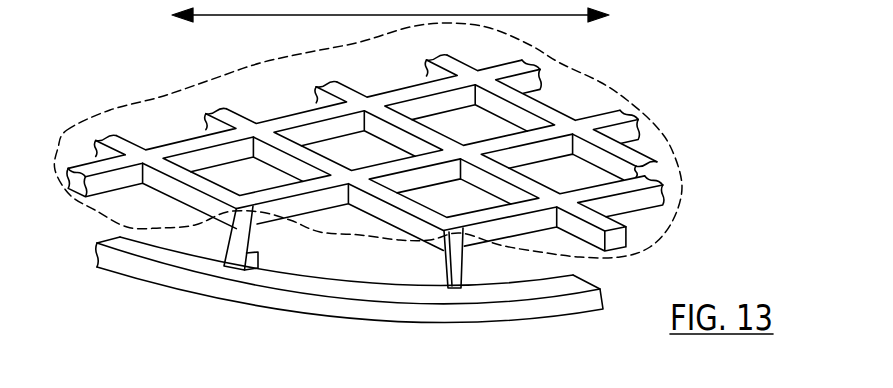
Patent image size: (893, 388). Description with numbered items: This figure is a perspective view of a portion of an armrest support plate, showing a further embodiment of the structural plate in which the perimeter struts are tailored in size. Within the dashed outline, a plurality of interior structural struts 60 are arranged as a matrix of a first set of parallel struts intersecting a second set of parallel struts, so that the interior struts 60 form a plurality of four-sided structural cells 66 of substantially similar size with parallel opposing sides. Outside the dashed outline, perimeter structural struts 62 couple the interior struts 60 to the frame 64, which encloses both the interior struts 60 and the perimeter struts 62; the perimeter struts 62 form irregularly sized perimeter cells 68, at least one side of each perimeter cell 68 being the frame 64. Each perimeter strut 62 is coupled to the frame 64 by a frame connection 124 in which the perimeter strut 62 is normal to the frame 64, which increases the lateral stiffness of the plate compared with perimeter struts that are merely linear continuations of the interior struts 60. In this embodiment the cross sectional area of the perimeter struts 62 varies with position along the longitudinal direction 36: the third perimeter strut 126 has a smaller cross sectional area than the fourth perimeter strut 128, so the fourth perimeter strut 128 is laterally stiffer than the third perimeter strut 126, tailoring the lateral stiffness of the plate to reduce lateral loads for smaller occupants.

The longitudinal direction 36 is at (543, 16).
The interior structural struts 60 is at (365, 153).
The structural cells 66 is at (358, 150).
The perimeter structural struts 62 is at (197, 236).
The frame 64 is at (230, 270).
The perimeter cells 68 is at (387, 278).
The frame connection 124 is at (258, 270).
The third perimeter strut 126 is at (456, 267).
The fourth perimeter strut 128 is at (238, 242).